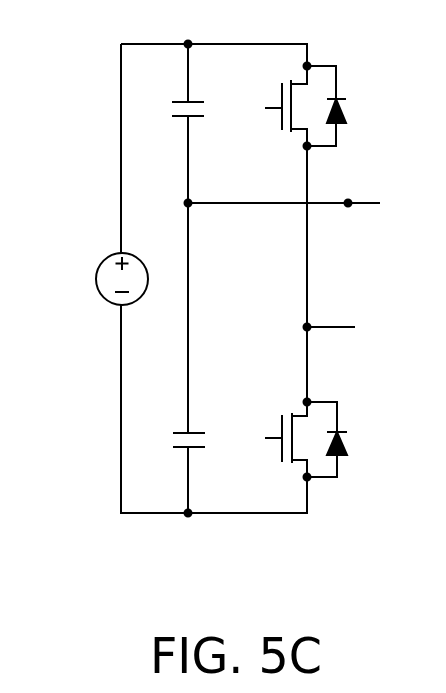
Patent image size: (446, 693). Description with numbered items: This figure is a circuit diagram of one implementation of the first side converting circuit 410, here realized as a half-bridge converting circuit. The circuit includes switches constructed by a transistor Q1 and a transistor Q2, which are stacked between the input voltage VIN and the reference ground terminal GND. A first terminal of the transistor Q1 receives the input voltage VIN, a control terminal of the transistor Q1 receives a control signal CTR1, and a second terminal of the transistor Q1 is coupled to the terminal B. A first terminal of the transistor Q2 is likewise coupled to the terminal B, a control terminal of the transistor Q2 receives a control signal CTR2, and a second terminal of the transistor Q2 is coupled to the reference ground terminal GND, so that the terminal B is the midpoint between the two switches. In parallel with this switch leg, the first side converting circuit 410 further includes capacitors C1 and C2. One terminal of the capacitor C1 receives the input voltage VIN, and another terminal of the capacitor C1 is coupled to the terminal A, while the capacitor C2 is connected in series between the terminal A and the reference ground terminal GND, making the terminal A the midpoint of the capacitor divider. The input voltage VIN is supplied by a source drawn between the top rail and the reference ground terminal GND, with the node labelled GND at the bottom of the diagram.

The first side converting circuit 410 is at (227, 302).
The input voltage VIN is at (100, 279).
The capacitor C1 is at (175, 111).
The capacitor C2 is at (172, 441).
The transistor Q1 is at (281, 106).
The transistor Q2 is at (281, 428).
The first control signal CTR1 is at (249, 126).
The second control signal CTR2 is at (249, 457).
The terminal A is at (294, 204).
The terminal B is at (344, 329).
The reference ground terminal GND is at (190, 537).